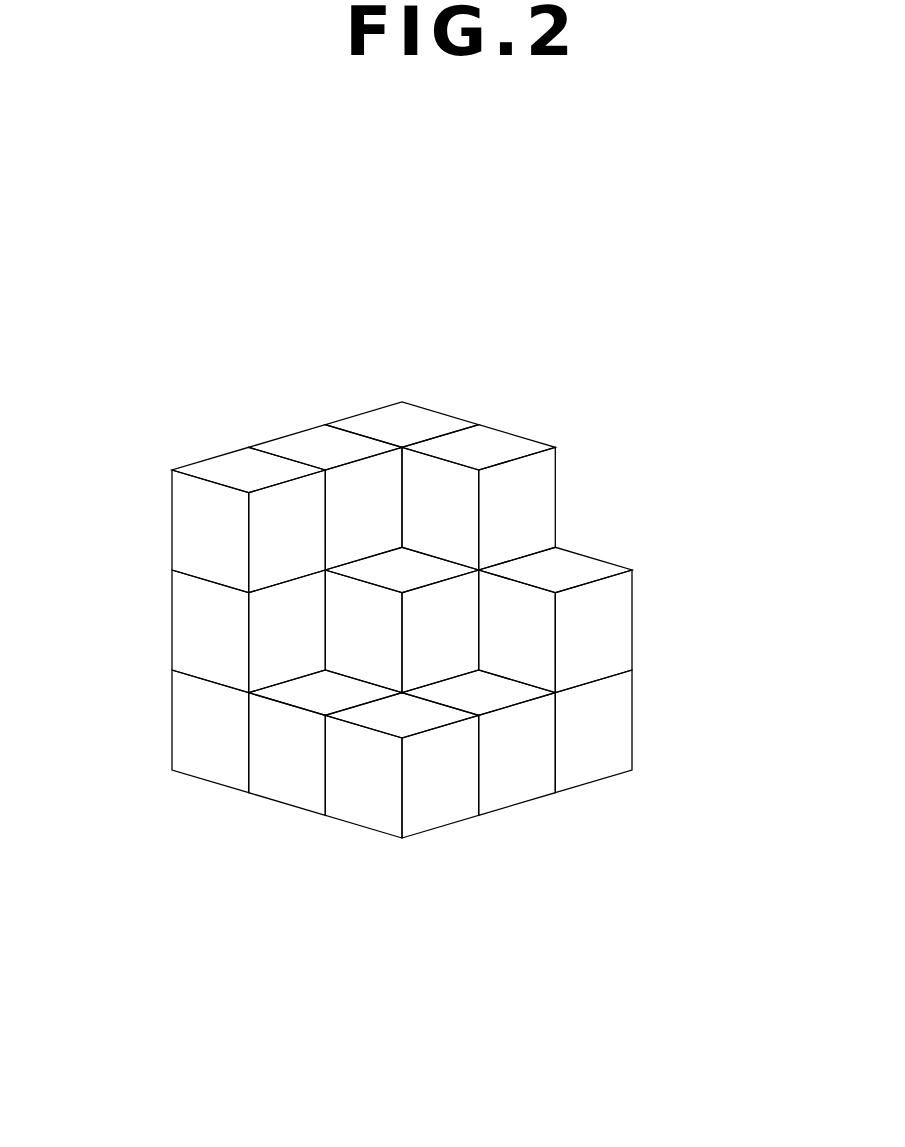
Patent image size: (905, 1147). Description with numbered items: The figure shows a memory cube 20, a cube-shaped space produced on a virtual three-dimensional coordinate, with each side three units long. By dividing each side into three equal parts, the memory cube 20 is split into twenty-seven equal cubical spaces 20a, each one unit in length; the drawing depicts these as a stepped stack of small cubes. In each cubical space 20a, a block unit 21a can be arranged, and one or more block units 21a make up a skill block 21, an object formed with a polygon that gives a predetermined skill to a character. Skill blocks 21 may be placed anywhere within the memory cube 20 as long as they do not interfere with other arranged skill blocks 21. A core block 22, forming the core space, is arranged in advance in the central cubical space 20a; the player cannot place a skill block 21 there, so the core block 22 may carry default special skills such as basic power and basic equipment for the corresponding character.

The memory cube 20 is at (457, 362).
The cubical space 20a is at (411, 645).
The skill block 21 is at (188, 455).
The block unit 21a is at (508, 447).
The core block 22 is at (443, 653).